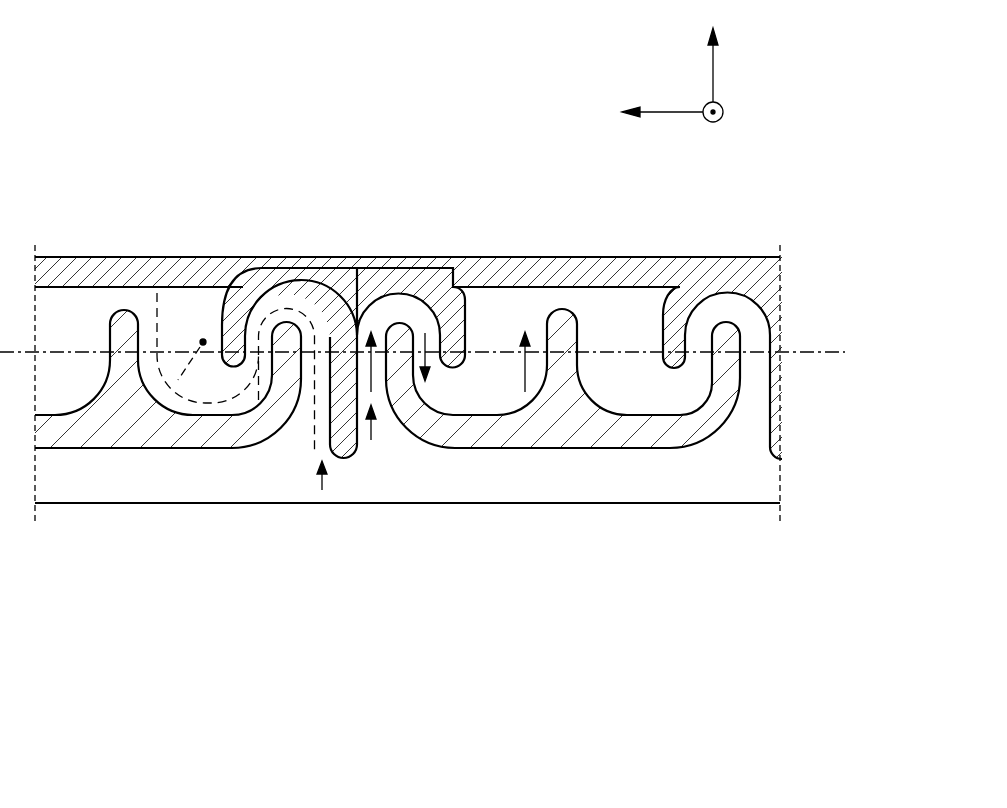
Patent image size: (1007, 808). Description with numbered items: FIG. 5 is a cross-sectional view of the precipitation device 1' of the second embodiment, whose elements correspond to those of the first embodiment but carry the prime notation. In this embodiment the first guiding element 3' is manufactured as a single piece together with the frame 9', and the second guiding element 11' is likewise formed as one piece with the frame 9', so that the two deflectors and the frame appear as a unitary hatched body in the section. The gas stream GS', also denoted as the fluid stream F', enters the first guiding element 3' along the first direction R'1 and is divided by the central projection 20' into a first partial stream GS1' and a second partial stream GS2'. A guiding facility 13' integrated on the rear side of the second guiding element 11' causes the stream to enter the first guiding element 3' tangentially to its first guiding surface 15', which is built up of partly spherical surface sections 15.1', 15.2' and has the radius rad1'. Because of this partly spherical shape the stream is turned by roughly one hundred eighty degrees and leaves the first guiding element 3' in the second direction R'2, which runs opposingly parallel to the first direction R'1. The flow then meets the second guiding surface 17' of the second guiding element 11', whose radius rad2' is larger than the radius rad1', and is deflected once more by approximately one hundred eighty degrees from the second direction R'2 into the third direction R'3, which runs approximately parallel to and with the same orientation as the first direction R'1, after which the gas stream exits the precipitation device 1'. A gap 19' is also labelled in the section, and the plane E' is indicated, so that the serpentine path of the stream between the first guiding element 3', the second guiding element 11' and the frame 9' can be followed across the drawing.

The precipitation device 1' is at (496, 365).
The first guiding element 3' is at (355, 359).
The frame 9' is at (408, 359).
The second guiding element 11' is at (563, 452).
The guiding facility 13' is at (168, 452).
The guiding surface 15' is at (355, 359).
The spherical surface section 15.1' is at (281, 243).
The spherical surface section 15.2' is at (432, 248).
The guiding surface 17' is at (563, 452).
The gap 19' is at (281, 274).
The central projection 20' is at (280, 465).
The gas stream GS' is at (280, 466).
The first partial stream GS1' is at (305, 547).
The second partial stream GS2' is at (423, 501).
The first direction R'1 is at (405, 290).
The second direction R'2 is at (464, 284).
The third direction R'3 is at (560, 290).
The radius rad1' is at (231, 287).
The radius rad2' is at (166, 251).
The fluid stream F' is at (150, 284).
The plane E' is at (438, 352).